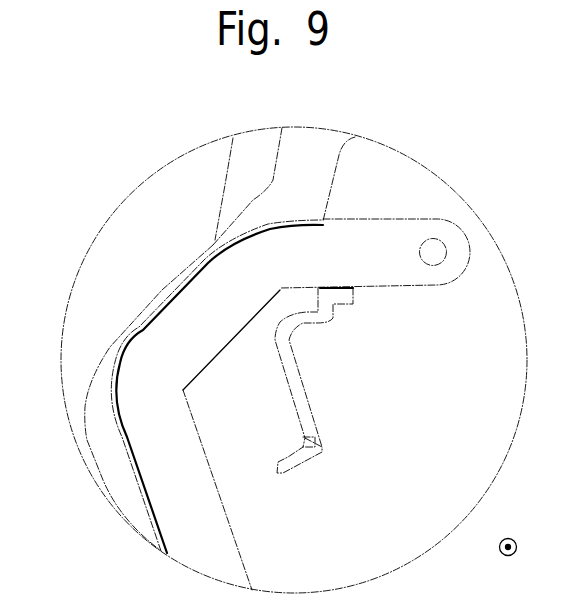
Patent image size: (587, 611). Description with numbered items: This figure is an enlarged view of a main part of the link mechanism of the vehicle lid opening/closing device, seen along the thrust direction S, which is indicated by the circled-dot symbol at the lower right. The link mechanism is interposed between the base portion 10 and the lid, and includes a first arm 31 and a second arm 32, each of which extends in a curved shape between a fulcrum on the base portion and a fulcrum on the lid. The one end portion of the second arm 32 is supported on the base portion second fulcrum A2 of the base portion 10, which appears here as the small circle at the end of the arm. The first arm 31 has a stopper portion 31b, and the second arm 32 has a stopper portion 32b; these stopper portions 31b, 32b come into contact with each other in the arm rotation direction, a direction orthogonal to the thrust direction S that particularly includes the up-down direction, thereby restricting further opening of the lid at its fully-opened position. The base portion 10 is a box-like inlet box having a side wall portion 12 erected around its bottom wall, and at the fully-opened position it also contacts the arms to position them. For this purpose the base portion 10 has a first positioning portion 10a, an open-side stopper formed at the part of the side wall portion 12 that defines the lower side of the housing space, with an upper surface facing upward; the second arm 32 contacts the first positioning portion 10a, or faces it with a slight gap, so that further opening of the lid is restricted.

The base portion 10 is at (355, 380).
The side wall portion 12 is at (317, 317).
The first positioning portion 10a is at (338, 296).
The first arm 31 is at (290, 170).
The stopper portion 31b is at (145, 330).
The second arm 32 is at (218, 537).
The stopper portion 32b is at (212, 263).
The base portion second fulcrum A2 is at (442, 252).
The thrust direction S is at (518, 543).